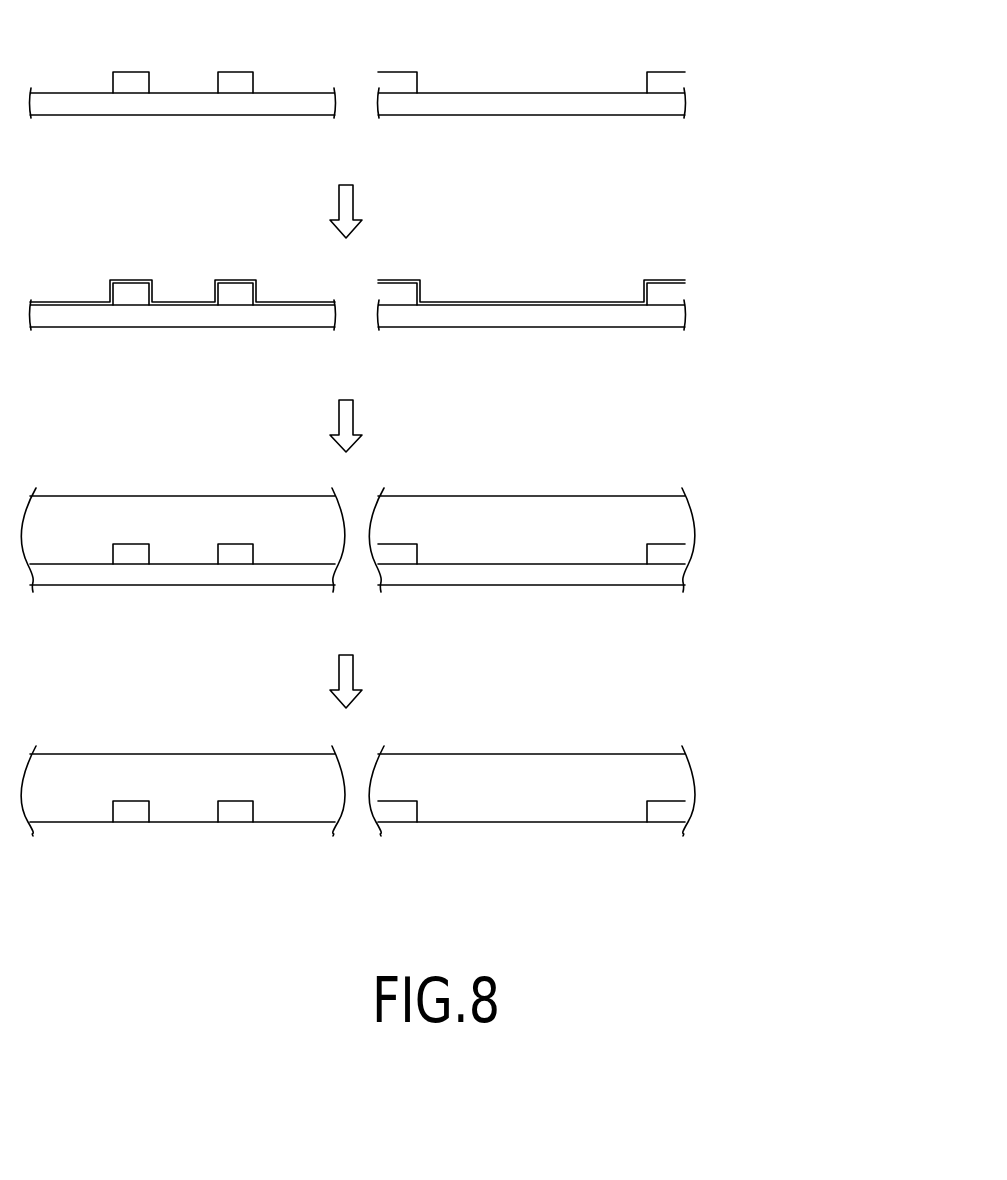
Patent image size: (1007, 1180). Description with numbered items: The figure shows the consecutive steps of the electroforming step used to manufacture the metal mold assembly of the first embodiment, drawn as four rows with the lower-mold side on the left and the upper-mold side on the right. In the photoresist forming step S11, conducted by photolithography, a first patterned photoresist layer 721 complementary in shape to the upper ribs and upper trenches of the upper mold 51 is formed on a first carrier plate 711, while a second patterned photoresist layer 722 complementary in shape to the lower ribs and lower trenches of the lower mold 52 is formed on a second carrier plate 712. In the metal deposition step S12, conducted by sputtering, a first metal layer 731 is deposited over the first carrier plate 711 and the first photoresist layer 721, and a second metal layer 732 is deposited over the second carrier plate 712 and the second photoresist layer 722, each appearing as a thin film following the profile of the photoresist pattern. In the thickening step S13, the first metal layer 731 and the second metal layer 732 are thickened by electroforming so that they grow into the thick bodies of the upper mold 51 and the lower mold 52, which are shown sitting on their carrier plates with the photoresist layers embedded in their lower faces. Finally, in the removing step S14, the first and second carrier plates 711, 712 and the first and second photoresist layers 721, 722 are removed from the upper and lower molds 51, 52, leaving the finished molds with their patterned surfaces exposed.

The upper mold 51 is at (522, 505).
The lower mold 52 is at (181, 500).
The first carrier plate 711 is at (520, 103).
The second carrier plate 712 is at (185, 103).
The first patterned photoresist layer 721 is at (399, 72).
The second patterned photoresist layer 722 is at (119, 72).
The first metal layer 731 is at (530, 300).
The second metal layer 732 is at (194, 315).
The photoresist forming step S11 is at (711, 98).
The metal deposition step S12 is at (711, 307).
The thickening step S13 is at (710, 542).
The removing step S14 is at (710, 799).